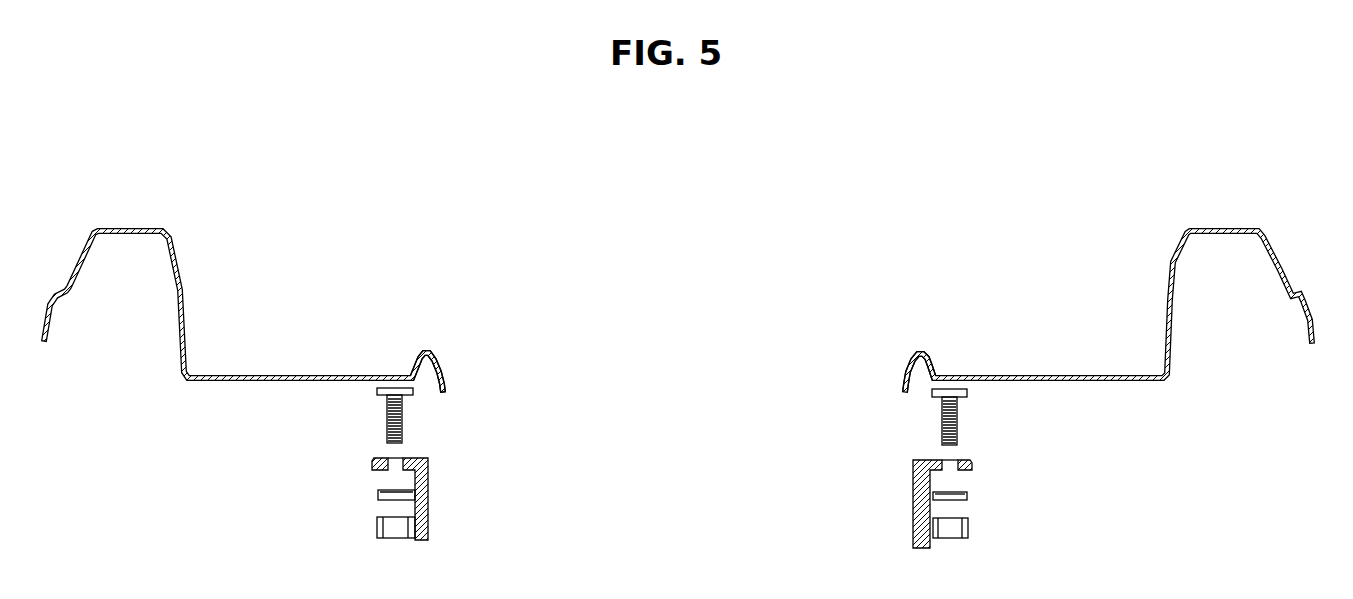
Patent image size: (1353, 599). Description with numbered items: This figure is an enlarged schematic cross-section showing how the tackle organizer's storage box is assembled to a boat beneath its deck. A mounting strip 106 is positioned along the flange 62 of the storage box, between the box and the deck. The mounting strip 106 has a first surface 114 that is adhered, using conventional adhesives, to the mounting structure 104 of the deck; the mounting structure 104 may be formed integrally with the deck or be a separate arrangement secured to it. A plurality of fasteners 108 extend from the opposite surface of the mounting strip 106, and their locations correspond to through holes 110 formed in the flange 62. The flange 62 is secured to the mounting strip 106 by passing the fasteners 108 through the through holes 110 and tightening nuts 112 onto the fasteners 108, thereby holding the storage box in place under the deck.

The flange 62 is at (373, 470).
The mounting structure 104 is at (265, 371).
The mounting strip 106 is at (408, 393).
The fasteners 108 is at (392, 408).
The through holes 110 is at (392, 459).
The nuts 112 is at (380, 536).
The first surface 114 is at (392, 387).